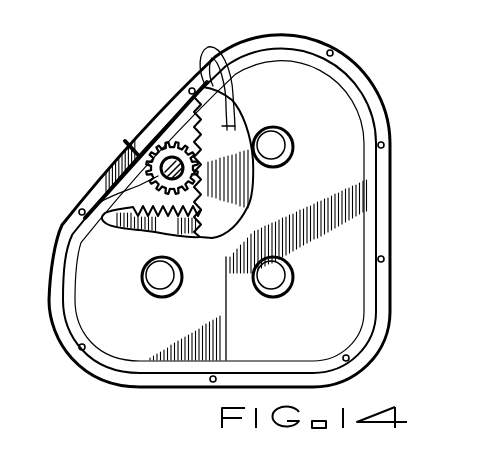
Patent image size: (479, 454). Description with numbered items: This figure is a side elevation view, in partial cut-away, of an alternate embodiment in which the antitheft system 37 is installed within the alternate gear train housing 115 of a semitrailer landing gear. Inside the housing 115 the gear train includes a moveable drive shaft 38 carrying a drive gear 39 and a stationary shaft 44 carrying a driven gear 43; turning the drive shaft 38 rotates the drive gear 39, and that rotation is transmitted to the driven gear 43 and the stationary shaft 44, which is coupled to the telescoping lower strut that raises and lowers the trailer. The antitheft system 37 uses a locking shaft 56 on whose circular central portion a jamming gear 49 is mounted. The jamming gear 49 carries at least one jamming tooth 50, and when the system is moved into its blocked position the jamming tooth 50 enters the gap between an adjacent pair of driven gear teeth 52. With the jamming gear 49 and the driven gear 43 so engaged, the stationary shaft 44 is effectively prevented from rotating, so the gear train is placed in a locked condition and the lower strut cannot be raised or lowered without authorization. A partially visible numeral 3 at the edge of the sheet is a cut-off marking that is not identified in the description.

The alternate gear train housing 115 is at (130, 376).
The drive gear 39 is at (57, 236).
The stationary shaft 44 is at (274, 150).
The moveable drive shaft 38 is at (161, 278).
The jamming tooth 50 is at (113, 187).
The antitheft system 37 is at (126, 142).
The locking shaft 56 is at (140, 185).
The jamming gear 49 is at (153, 152).
The driven gear teeth 52 is at (222, 133).
The driven gear 43 is at (197, 74).
The partial numeral 3 is at (7, 57).